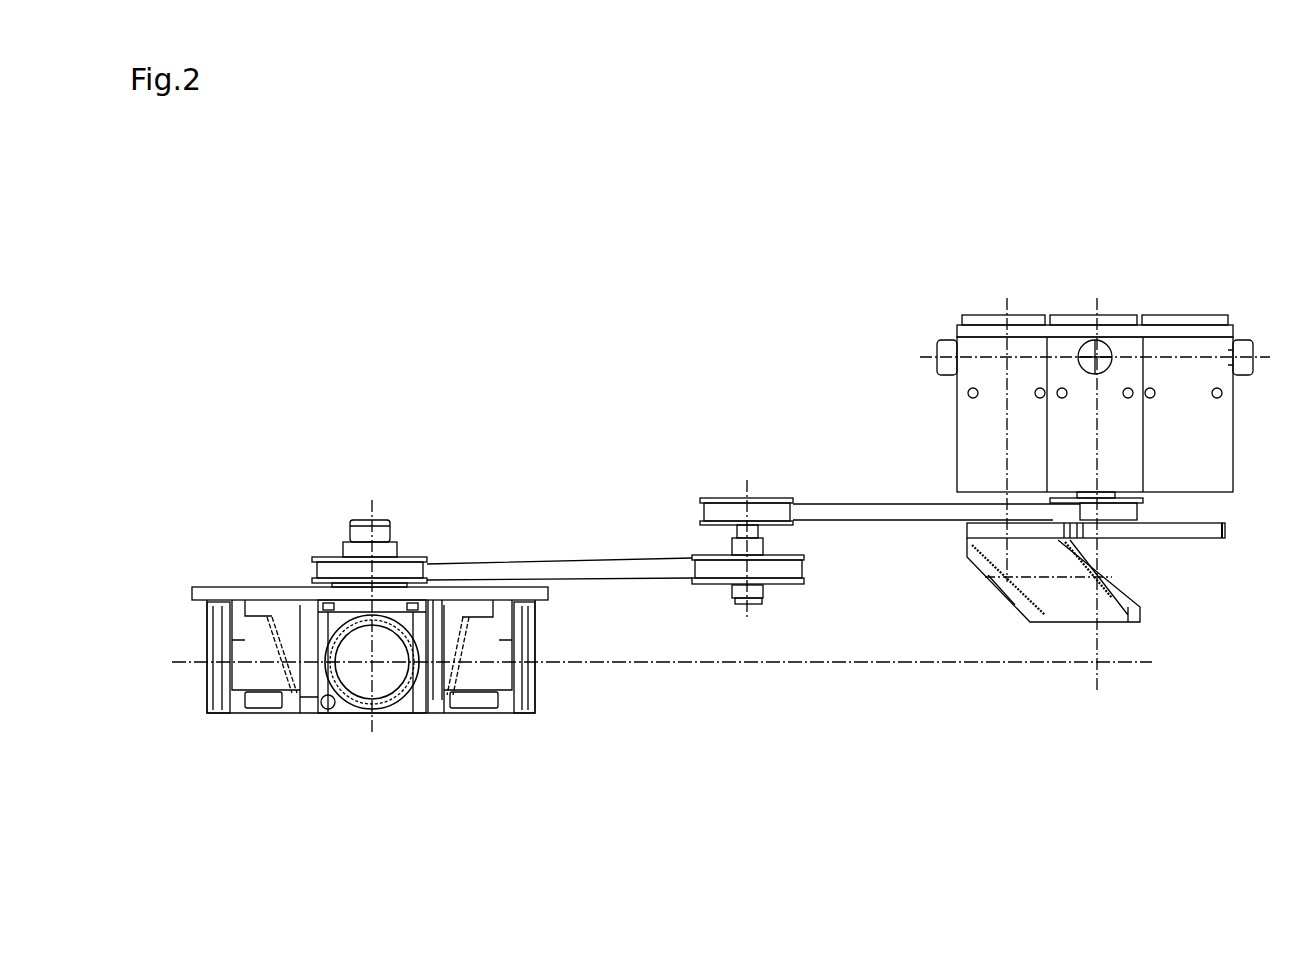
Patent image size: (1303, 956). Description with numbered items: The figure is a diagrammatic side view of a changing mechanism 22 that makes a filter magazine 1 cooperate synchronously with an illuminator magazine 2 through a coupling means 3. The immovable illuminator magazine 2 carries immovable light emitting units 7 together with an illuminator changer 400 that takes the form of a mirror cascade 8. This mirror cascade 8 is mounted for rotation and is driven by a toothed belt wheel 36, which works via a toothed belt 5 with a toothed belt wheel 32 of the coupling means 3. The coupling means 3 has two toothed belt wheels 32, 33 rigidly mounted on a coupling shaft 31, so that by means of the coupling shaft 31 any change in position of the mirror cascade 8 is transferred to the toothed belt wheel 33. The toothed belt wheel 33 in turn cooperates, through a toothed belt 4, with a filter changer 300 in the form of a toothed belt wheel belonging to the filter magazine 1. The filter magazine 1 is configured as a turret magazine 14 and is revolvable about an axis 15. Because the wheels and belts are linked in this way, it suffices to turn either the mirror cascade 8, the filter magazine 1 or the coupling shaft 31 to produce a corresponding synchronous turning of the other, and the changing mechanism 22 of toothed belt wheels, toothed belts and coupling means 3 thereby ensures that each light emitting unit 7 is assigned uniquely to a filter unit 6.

The filter magazine 1 is at (250, 577).
The illuminator magazine 2 is at (1193, 297).
The coupling means 3 is at (724, 476).
The toothed belt 4 is at (535, 562).
The toothed belt 5 is at (838, 512).
The filter unit 6 is at (475, 672).
The light emitting unit 7 is at (1183, 350).
The mirror cascade 8 is at (1070, 598).
The turret magazine 14 is at (292, 595).
The axis 15 is at (372, 572).
The changing mechanism 22 is at (522, 330).
The coupling shaft 31 is at (735, 600).
The toothed belt wheel 32 is at (757, 498).
The toothed belt wheel 33 is at (787, 585).
The toothed belt wheel 36 is at (1128, 513).
The filter changer 300 is at (330, 550).
The illuminator changer 400 is at (1122, 552).